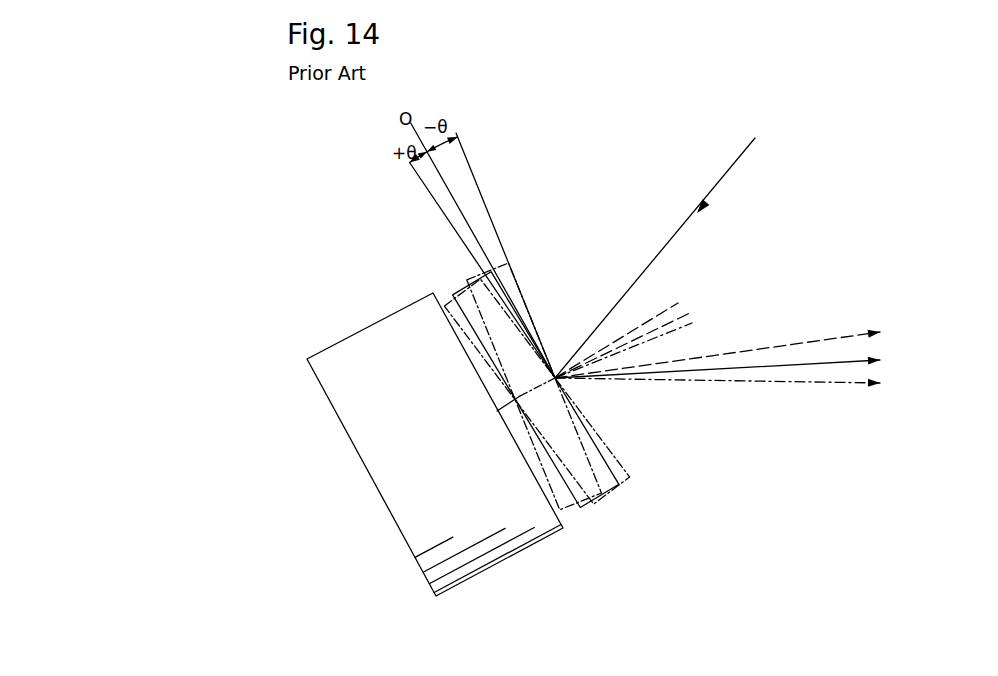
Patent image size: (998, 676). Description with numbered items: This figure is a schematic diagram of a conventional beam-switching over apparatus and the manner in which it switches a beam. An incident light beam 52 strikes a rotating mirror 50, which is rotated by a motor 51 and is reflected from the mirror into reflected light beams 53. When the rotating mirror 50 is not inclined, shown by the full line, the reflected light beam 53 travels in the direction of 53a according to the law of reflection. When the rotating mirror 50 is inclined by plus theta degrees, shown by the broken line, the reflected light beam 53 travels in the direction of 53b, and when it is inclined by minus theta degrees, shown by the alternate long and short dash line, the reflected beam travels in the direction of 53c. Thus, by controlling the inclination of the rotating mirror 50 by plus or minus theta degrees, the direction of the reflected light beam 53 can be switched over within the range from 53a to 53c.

The rotating mirror 50 is at (616, 497).
The motor 51 is at (497, 565).
The incident light beam 52 is at (725, 178).
The reflected light beams 53 is at (763, 349).
The reflected light beam direction at no inclination 53a is at (736, 364).
The reflected light beam direction at plus theta inclination 53b is at (736, 349).
The reflected light beam direction at minus theta inclination 53c is at (736, 385).